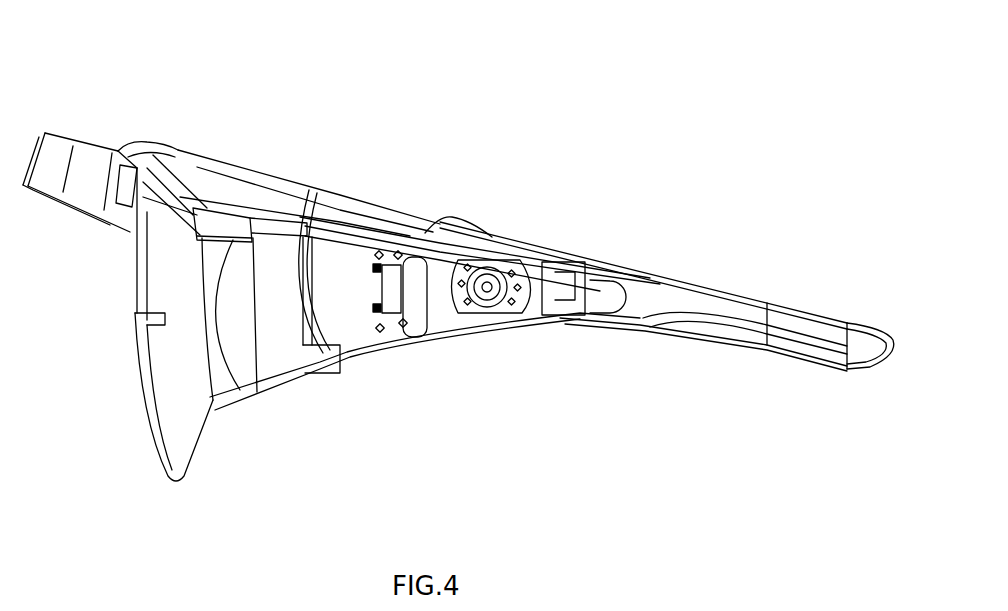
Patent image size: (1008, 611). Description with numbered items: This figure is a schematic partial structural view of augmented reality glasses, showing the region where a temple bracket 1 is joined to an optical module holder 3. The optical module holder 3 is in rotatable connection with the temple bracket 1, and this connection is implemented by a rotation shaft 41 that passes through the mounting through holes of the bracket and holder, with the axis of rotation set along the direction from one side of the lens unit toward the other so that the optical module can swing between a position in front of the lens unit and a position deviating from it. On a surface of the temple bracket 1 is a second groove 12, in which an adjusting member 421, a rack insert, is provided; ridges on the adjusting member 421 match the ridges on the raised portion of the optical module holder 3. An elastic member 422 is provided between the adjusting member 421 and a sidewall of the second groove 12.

The temple bracket 1 is at (822, 355).
The second groove 12 is at (397, 320).
The optical module holder 3 is at (450, 217).
The rotation shaft 41 is at (488, 287).
The adjusting member 421 is at (404, 258).
The elastic member 422 is at (373, 307).